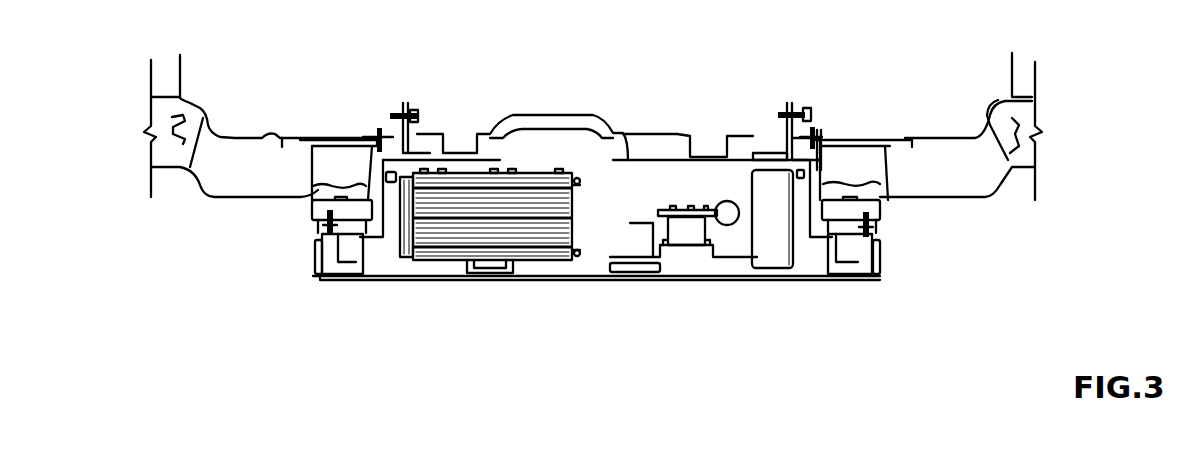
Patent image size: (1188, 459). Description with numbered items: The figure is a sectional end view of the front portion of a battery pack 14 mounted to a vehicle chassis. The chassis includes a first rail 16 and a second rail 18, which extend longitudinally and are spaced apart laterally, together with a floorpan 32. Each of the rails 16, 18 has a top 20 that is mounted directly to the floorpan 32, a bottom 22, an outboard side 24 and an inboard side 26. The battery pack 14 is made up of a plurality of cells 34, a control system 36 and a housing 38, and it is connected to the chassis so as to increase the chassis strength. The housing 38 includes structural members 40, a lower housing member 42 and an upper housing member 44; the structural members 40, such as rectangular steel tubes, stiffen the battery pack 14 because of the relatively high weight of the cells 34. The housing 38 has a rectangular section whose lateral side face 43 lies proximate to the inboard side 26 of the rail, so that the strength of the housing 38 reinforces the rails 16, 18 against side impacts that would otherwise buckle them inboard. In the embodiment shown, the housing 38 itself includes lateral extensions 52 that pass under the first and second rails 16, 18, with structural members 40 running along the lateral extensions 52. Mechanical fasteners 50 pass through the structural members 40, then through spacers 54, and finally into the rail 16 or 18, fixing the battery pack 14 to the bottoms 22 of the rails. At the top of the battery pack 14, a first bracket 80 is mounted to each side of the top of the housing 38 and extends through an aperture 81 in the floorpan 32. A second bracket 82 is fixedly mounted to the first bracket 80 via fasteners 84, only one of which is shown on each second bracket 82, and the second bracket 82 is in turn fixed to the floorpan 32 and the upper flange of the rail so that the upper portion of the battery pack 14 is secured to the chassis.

The battery pack 14 is at (547, 130).
The first rail 16 is at (307, 190).
The second rail 18 is at (887, 168).
The top 20 is at (293, 137).
The bottom 22 is at (335, 200).
The outboard side 24 is at (312, 214).
The inboard side 26 is at (398, 213).
The floorpan 32 is at (498, 131).
The cells 34 is at (460, 250).
The control system 36 is at (680, 187).
The housing 38 is at (818, 277).
The structural members 40 is at (365, 258).
The lower housing member 42 is at (592, 278).
The lateral side face 43 is at (340, 193).
The upper housing member 44 is at (627, 158).
The mechanical fasteners 50 is at (329, 240).
The lateral extensions 52 is at (315, 262).
The spacers 54 is at (828, 225).
The first bracket 80 is at (760, 153).
The aperture 81 is at (788, 128).
The second bracket 82 is at (820, 110).
The fasteners 84 is at (783, 110).